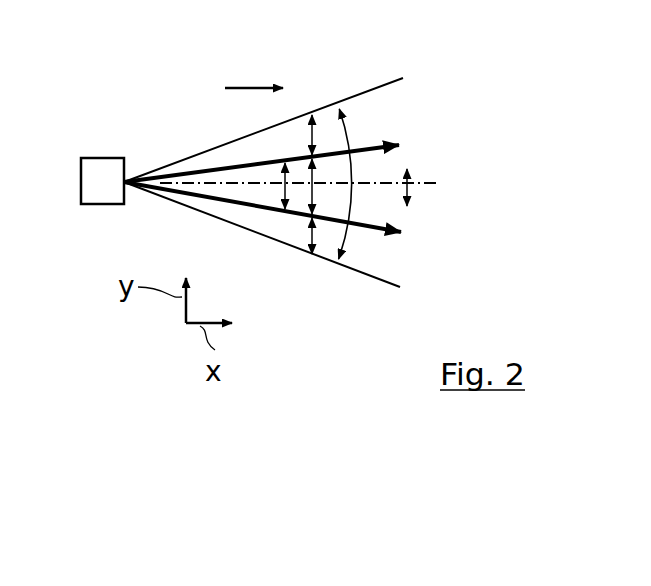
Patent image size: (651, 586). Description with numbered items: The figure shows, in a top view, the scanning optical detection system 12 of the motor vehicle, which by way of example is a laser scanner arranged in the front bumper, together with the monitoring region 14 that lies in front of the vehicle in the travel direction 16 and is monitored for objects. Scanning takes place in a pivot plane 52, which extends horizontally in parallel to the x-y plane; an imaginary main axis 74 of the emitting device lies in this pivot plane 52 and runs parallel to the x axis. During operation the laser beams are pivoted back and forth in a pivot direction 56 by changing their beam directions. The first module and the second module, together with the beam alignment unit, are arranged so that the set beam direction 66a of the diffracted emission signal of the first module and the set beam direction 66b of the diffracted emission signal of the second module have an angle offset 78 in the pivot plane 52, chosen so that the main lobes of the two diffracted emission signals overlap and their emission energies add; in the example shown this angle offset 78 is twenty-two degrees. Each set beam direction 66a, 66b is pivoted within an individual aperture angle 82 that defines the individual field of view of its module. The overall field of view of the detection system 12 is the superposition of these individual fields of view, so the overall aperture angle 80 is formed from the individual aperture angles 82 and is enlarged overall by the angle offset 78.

The scanning optical detection system 12 is at (93, 167).
The travel direction 16 is at (237, 87).
The monitoring region 14 is at (563, 150).
The pivot plane 52 is at (422, 127).
The main axis 74 is at (440, 183).
The set beam direction of the second module 66b is at (403, 146).
The set beam direction of the first module 66a is at (403, 233).
The pivot direction 56 is at (408, 192).
The overall aperture angle 80 is at (350, 243).
The individual aperture angle 82 is at (316, 110).
The angle offset 78 is at (283, 195).